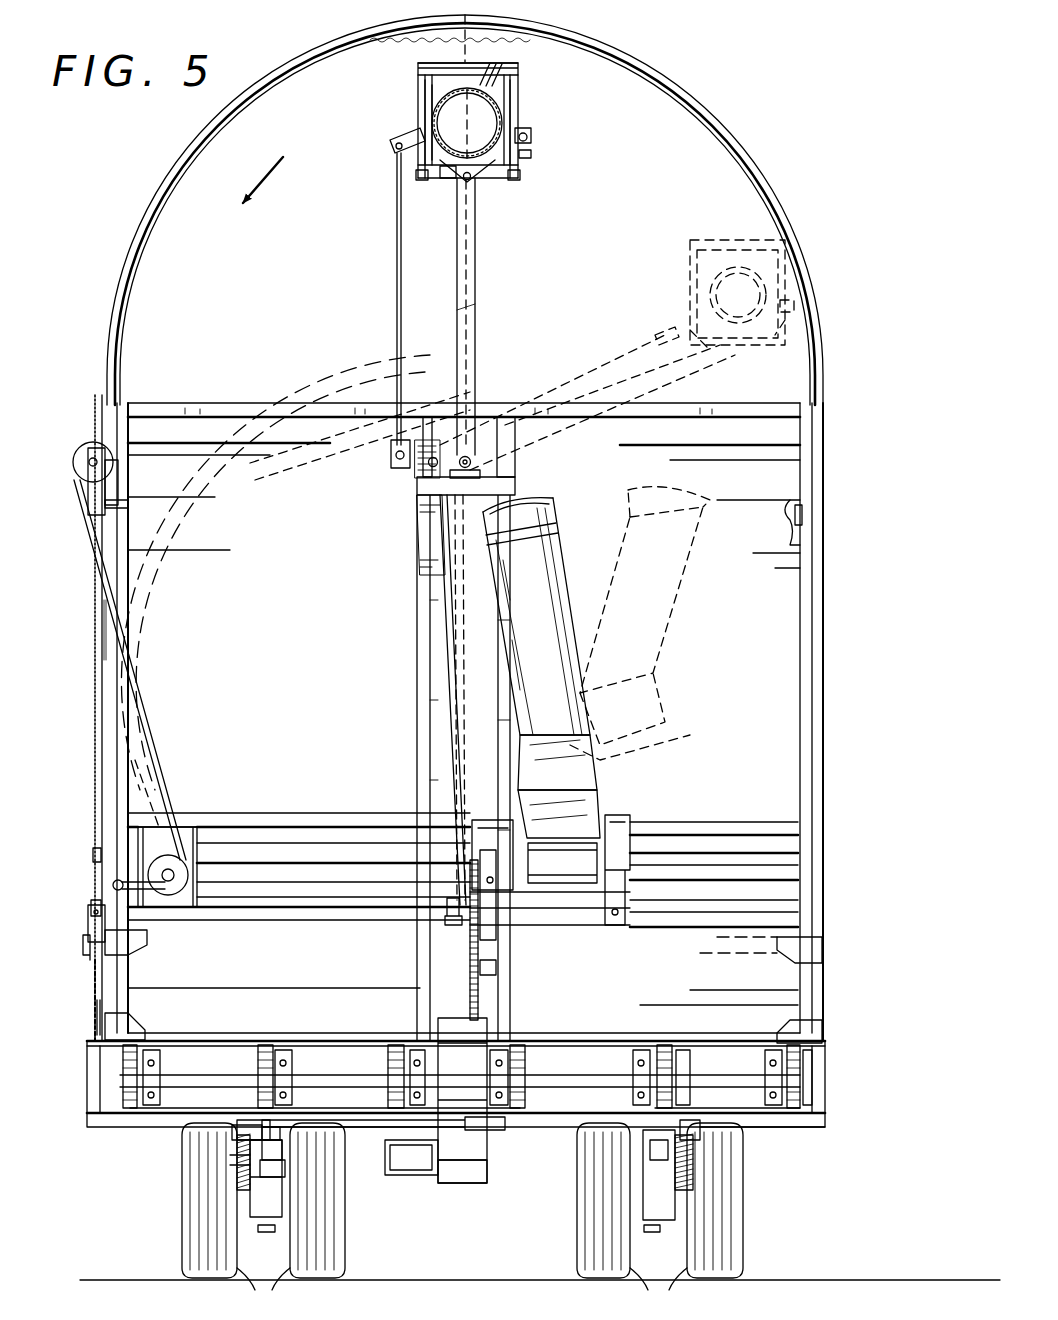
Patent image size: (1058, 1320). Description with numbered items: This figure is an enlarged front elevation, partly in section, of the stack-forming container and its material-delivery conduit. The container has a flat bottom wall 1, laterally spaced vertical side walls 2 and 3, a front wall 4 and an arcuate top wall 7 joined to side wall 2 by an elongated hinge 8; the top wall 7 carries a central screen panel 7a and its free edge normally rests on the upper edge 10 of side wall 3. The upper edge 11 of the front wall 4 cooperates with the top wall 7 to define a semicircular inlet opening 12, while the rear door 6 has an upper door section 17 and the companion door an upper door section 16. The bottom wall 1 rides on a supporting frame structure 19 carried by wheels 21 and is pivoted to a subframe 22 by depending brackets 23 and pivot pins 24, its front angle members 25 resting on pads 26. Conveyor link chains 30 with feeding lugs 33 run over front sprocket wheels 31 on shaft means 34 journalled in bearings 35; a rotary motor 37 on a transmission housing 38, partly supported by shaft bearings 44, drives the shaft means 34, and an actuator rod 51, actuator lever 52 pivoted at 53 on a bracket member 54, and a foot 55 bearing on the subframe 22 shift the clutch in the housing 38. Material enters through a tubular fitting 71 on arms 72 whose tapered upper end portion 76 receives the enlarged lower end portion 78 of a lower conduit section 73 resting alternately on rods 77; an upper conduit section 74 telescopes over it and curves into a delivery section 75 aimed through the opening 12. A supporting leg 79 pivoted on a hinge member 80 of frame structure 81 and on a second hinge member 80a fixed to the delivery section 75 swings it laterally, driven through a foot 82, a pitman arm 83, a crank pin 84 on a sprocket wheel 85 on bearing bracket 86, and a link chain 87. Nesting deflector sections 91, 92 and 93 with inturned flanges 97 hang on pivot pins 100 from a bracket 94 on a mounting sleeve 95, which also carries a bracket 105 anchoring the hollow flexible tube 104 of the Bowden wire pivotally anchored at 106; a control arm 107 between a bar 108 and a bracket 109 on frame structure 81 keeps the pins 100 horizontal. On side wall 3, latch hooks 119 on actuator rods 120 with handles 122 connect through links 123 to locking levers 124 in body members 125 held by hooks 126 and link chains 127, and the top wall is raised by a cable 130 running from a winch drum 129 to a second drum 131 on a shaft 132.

The bottom wall 1 is at (132, 1127).
The side wall 2 is at (826, 722).
The side wall 3 is at (100, 712).
The front wall 4 is at (257, 400).
The door 6 is at (478, 795).
The top wall 7 is at (130, 236).
The central panel 7a is at (401, 35).
The hinge 8 is at (792, 520).
The upper edge 10 is at (118, 488).
The upper edge 11 is at (232, 400).
The inlet opening 12 is at (641, 102).
The upper door section 16 is at (614, 280).
The upper door section 17 is at (254, 264).
The supporting frame structure 19 is at (266, 1222).
The wheels 21 is at (462, 1218).
The subframe 22 is at (230, 1192).
The brackets 23 is at (238, 1177).
The pivot pins 24 is at (230, 1160).
The angle members 25 is at (748, 1128).
The pads 26 is at (240, 1133).
The link chains 30 is at (388, 1066).
The front sprocket wheels 31 is at (385, 1086).
The feeding lugs 33 is at (395, 1050).
The shaft means 34 is at (218, 1088).
The bearings 35 is at (162, 1080).
The rotary motor 37 is at (388, 1172).
The transmission housing 38 is at (440, 1183).
The shaft bearings 44 is at (487, 1082).
The actuator rod 51 is at (365, 1130).
The actuator lever 52 is at (287, 1170).
The pivotal mounting 53 is at (282, 1150).
The bracket member 54 is at (280, 1140).
The foot 55 is at (232, 1132).
The tubular fitting 71 is at (575, 908).
The arms 72 is at (518, 832).
The lower conduit section 73 is at (550, 618).
The upper conduit section 74 is at (650, 518).
The delivery section 75 is at (502, 115).
The tapered upper end portion 76 is at (602, 786).
The rods 77 is at (600, 845).
The enlarged lower end portion 78 is at (598, 760).
The supporting leg 79 is at (476, 293).
The hinge member 80 is at (478, 460).
The second hinge member 80a is at (471, 180).
The frame structure 81 is at (417, 530).
The foot 82 is at (440, 440).
The pitman arm 83 is at (445, 645).
The crank pin 84 is at (447, 910).
The sprocket wheel 85 is at (470, 930).
The bearing bracket 86 is at (496, 938).
The link chain 87 is at (470, 975).
The deflector section 91 is at (425, 100).
The deflector section 92 is at (518, 92).
The deflector section 93 is at (518, 72).
The bracket 94 is at (441, 179).
The mounting sleeve 95 is at (430, 118).
The inturned flanges 97 is at (499, 59).
The pivot pins 100 is at (520, 176).
The bolt 104 is at (527, 148).
The bracket 105 is at (531, 136).
The pivotal anchorage 106 is at (668, 190).
The control arm 107 is at (396, 303).
The bar 108 is at (392, 145).
The bracket 109 is at (390, 456).
The latch hooks 119 is at (120, 500).
The actuator rods 120 is at (95, 763).
The handle 122 is at (94, 850).
The links 123 is at (92, 900).
The body members 125 is at (88, 925).
The locking levers 124 is at (88, 958).
The hooks 126 is at (93, 993).
The link chains 127 is at (95, 1010).
The rotary drum 129 is at (182, 860).
The cable 130 is at (160, 760).
The second drum 131 is at (88, 447).
The shaft 132 is at (107, 457).